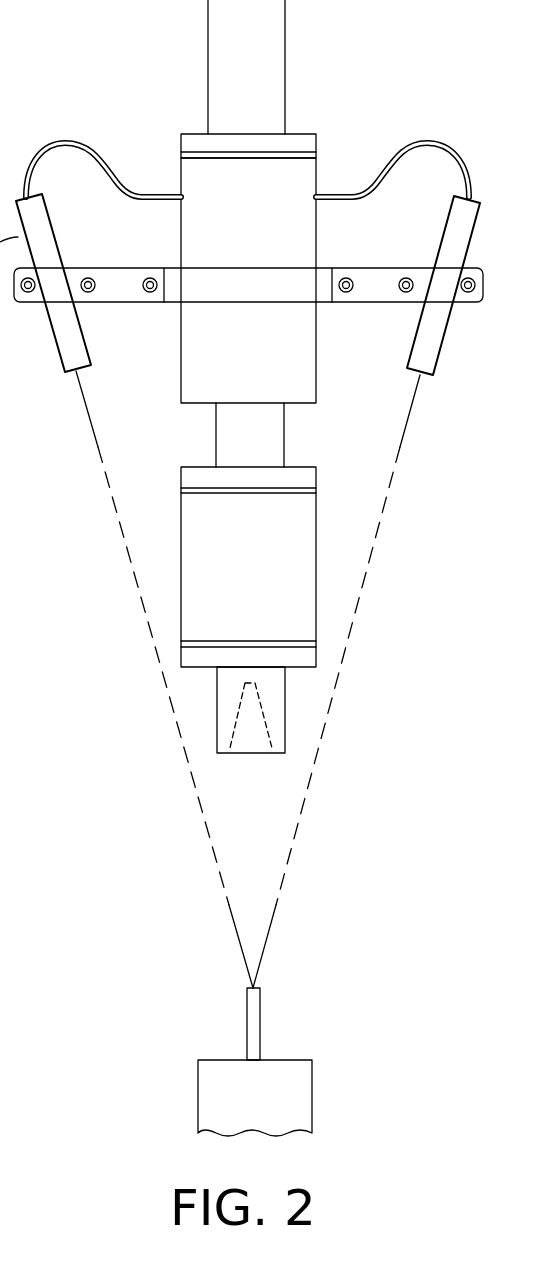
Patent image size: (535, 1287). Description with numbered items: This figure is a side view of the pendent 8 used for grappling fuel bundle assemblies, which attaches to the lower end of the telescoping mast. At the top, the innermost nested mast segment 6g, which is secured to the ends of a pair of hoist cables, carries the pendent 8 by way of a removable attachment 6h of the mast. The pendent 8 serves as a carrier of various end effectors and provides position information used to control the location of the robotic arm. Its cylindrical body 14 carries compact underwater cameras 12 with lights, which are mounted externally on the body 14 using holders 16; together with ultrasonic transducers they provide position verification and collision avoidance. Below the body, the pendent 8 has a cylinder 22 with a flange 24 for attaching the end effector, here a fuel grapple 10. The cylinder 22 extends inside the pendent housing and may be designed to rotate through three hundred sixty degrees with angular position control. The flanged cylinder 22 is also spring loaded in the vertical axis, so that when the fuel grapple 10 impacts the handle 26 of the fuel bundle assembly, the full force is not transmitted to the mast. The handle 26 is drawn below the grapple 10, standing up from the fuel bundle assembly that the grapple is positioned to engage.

The innermost nested mast segment 6g is at (286, 30).
The removable attachment 6h is at (302, 134).
The pendent 8 is at (335, 150).
The cylindrical body 14 is at (181, 232).
The compact underwater cameras 12 is at (442, 240).
The holders 16 is at (355, 303).
The cylinder 22 is at (285, 437).
The flange 24 is at (197, 475).
The fuel grapple 10 is at (285, 696).
The handle 26 is at (262, 1020).